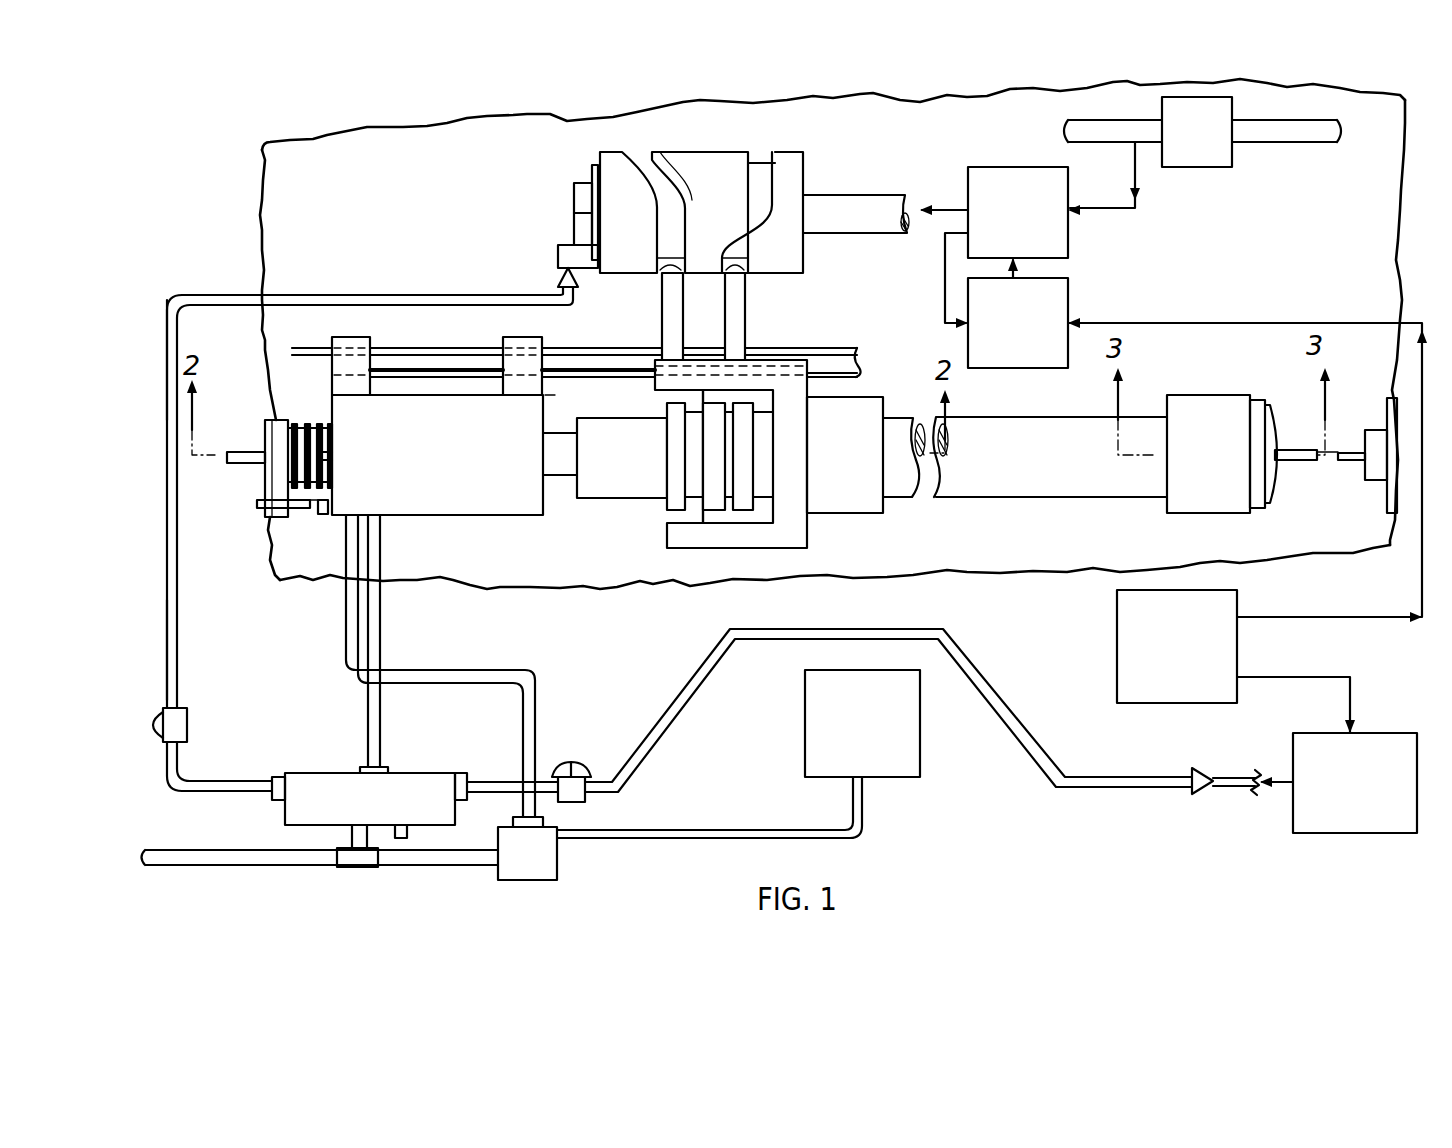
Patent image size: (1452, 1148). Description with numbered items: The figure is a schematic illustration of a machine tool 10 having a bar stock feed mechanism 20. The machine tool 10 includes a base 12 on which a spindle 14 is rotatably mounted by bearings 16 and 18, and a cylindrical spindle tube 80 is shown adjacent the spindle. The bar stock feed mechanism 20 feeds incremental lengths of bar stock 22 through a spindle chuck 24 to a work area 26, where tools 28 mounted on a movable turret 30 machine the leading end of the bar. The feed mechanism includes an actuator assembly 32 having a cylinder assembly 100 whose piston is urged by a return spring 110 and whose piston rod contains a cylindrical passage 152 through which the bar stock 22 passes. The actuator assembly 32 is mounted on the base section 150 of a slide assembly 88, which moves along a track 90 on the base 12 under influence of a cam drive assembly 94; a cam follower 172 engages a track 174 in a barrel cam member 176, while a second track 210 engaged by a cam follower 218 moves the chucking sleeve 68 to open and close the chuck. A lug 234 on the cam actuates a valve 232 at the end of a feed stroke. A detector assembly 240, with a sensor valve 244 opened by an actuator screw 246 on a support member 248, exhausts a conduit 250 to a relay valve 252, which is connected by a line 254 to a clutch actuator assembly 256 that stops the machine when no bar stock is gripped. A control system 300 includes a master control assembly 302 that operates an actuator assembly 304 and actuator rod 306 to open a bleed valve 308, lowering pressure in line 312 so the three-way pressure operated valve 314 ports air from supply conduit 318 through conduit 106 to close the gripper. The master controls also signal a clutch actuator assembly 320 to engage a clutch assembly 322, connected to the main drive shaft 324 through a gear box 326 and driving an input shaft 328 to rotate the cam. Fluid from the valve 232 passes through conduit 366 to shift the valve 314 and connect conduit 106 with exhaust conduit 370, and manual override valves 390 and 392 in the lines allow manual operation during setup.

The machine tool 10 is at (205, 152).
The base 12 is at (262, 198).
The spindle 14 is at (1070, 505).
The bearing 16 is at (868, 470).
The bearing 18 is at (1230, 466).
The bar stock feed mechanism 20 is at (566, 522).
The bar stock 22 is at (245, 455).
The spindle chuck 24 is at (1268, 512).
The work area 26 is at (1305, 475).
The tools 28 is at (1355, 472).
The movable turret 30 is at (1385, 400).
The actuator assembly 32 is at (444, 525).
The chucking sleeve 68 is at (674, 488).
The spindle tube 80 is at (900, 500).
The slide assembly 88 is at (445, 348).
The track 90 is at (292, 356).
The cam drive assembly 94 is at (790, 278).
The cylinder assembly 100 is at (443, 432).
The conduit 106 is at (379, 720).
The return spring 110 is at (318, 414).
The base section 150 is at (425, 330).
The cylindrical passage 152 is at (328, 465).
The cam follower 172 is at (742, 275).
The track 174 is at (772, 148).
The barrel cam member 176 is at (600, 193).
The second track 210 is at (634, 146).
The cam follower 218 is at (660, 272).
The valve 232 is at (556, 282).
The lug 234 is at (560, 256).
The detector assembly 240 is at (290, 525).
The sensor valve 244 is at (320, 518).
The actuator screw 246 is at (266, 508).
The support member 248 is at (276, 478).
The conduit 250 is at (524, 668).
The relay valve 252 is at (558, 858).
The fluid line 254 is at (700, 832).
The clutch actuator assembly 256 is at (865, 668).
The control system 300 is at (988, 796).
The master control assembly 302 is at (1110, 598).
The actuator assembly 304 is at (1350, 833).
The actuator rod 306 is at (1228, 790).
The bleed valve 308 is at (1233, 745).
The line 312 is at (857, 630).
The three-way pressure operated valve 314 is at (373, 808).
The supply conduit 318 is at (388, 858).
The clutch actuator assembly 320 is at (1040, 284).
The clutch assembly 322 is at (1025, 152).
The main drive shaft 324 is at (1310, 121).
The gear box 326 is at (1225, 160).
The input shaft 328 is at (897, 196).
The conduit 366 is at (180, 668).
The exhaust conduit 370 is at (410, 838).
The manual override valve 390 is at (186, 726).
The manual override valve 392 is at (575, 762).